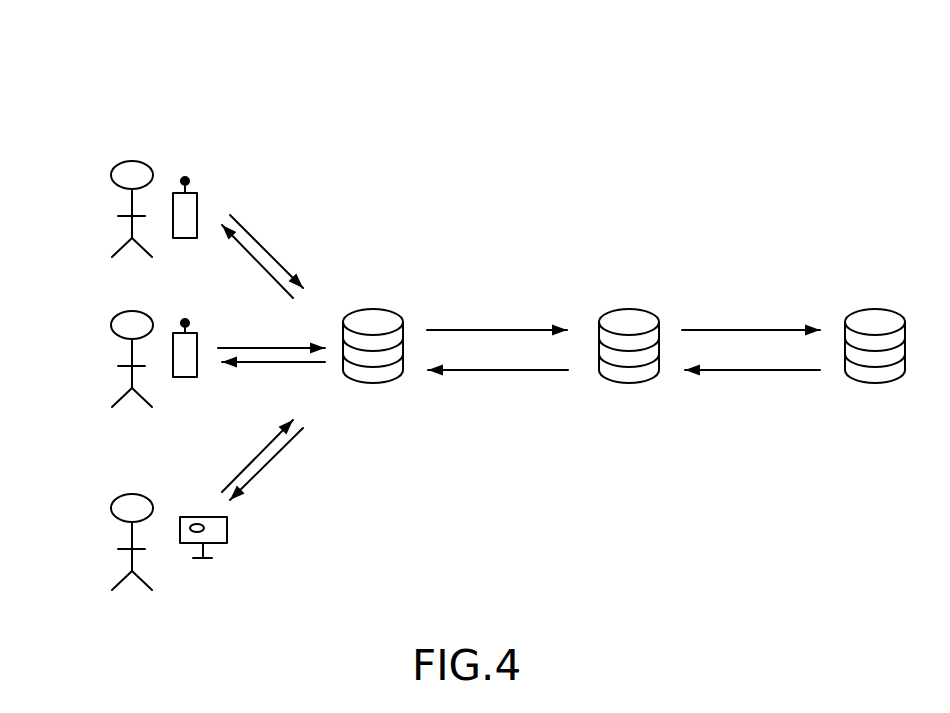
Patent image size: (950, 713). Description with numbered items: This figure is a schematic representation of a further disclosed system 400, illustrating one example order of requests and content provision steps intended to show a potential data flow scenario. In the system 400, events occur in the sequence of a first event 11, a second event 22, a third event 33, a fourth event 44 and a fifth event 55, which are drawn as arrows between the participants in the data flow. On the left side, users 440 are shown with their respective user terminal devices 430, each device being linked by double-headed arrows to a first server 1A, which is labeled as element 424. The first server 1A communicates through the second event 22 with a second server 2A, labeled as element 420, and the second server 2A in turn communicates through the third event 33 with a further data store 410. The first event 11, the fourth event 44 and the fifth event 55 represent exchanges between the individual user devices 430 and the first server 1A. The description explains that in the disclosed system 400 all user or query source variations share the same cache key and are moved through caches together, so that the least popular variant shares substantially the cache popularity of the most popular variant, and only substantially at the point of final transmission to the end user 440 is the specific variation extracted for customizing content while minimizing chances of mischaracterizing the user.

The system 400 is at (395, 155).
The database server 410 is at (878, 315).
The intermediate server 420 is at (629, 315).
The front-end server 424 is at (373, 315).
The user terminal device 430 is at (197, 202).
The user 440 is at (128, 198).
The first event 11 is at (262, 256).
The second event 22 is at (497, 331).
The third event 33 is at (751, 331).
The fourth event 44 is at (271, 340).
The fifth event 55 is at (262, 460).
The server 1A is at (387, 413).
The server 2A is at (640, 413).